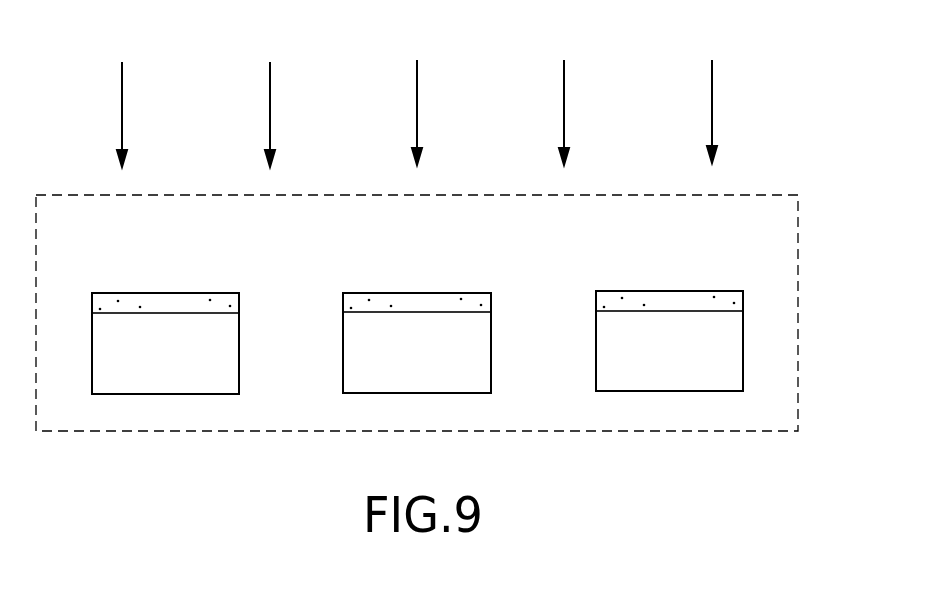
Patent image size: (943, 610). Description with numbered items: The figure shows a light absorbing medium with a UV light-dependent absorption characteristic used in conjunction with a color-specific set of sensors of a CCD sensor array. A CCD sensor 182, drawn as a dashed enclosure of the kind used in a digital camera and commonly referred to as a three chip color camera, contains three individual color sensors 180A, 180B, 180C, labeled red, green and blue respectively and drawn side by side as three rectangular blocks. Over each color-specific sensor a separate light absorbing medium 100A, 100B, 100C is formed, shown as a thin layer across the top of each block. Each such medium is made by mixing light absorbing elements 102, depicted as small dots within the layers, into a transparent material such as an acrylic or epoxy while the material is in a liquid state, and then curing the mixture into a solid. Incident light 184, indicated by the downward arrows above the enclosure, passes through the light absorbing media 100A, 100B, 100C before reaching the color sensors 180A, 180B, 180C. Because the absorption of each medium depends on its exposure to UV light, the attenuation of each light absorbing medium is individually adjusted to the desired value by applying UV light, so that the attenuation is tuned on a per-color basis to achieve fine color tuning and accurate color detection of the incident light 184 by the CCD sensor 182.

The incident light 184 is at (712, 106).
The CCD sensor 182 is at (755, 193).
The light absorbing medium 100A is at (140, 293).
The light absorbing medium 100B is at (391, 293).
The light absorbing medium 100C is at (644, 291).
The light absorbing elements 102 is at (162, 298).
The color sensor 180A is at (130, 385).
The color sensor 180B is at (382, 385).
The color sensor 180C is at (634, 385).